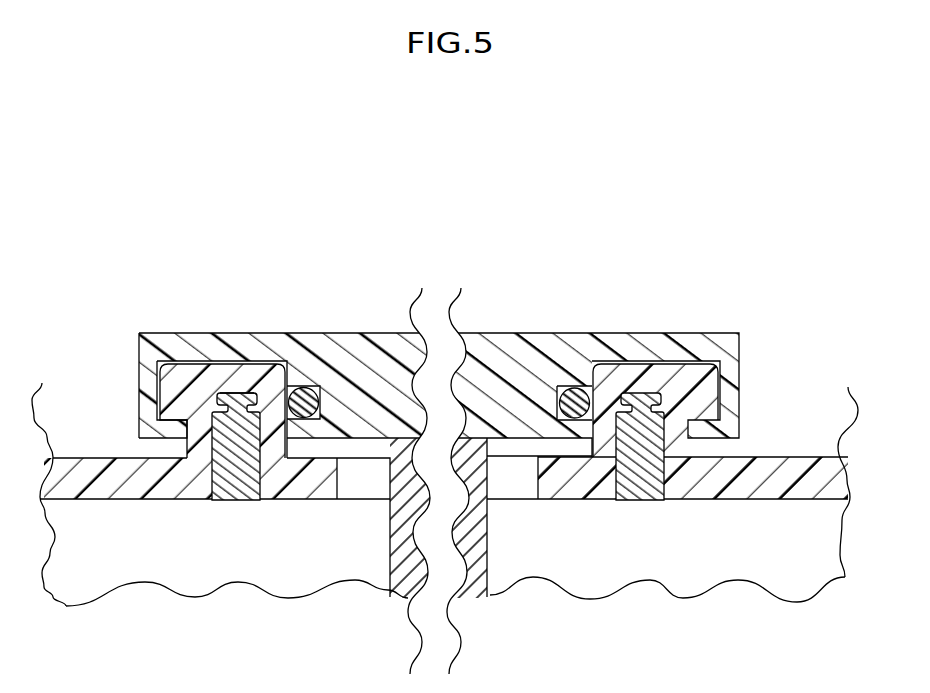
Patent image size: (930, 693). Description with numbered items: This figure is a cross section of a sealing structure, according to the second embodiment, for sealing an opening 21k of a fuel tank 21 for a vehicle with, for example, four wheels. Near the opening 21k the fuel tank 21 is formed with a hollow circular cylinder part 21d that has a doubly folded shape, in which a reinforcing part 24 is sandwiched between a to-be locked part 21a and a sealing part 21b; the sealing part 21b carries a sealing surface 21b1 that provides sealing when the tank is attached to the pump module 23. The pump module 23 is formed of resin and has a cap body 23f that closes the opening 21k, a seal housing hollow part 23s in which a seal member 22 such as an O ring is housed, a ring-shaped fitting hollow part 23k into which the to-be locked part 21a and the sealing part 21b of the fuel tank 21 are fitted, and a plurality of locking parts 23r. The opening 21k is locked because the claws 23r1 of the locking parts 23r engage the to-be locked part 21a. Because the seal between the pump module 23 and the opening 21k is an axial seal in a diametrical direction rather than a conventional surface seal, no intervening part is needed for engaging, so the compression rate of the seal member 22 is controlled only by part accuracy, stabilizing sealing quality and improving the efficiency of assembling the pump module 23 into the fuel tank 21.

The fuel tank 21 is at (445, 446).
The to-be locked part 21a is at (182, 408).
The sealing part 21b is at (191, 447).
The sealing surface 21b1 is at (302, 460).
The hollow circular cylinder part 21d is at (245, 404).
The opening 21k is at (510, 473).
The seal member 22 is at (303, 387).
The pump module 23 is at (406, 356).
The cap body 23f is at (520, 367).
The fitting hollow part 23k is at (190, 378).
The locking part 23r is at (121, 391).
The claw 23r1 is at (160, 432).
The seal housing hollow part 23s is at (327, 392).
The reinforcing part 24 is at (229, 358).